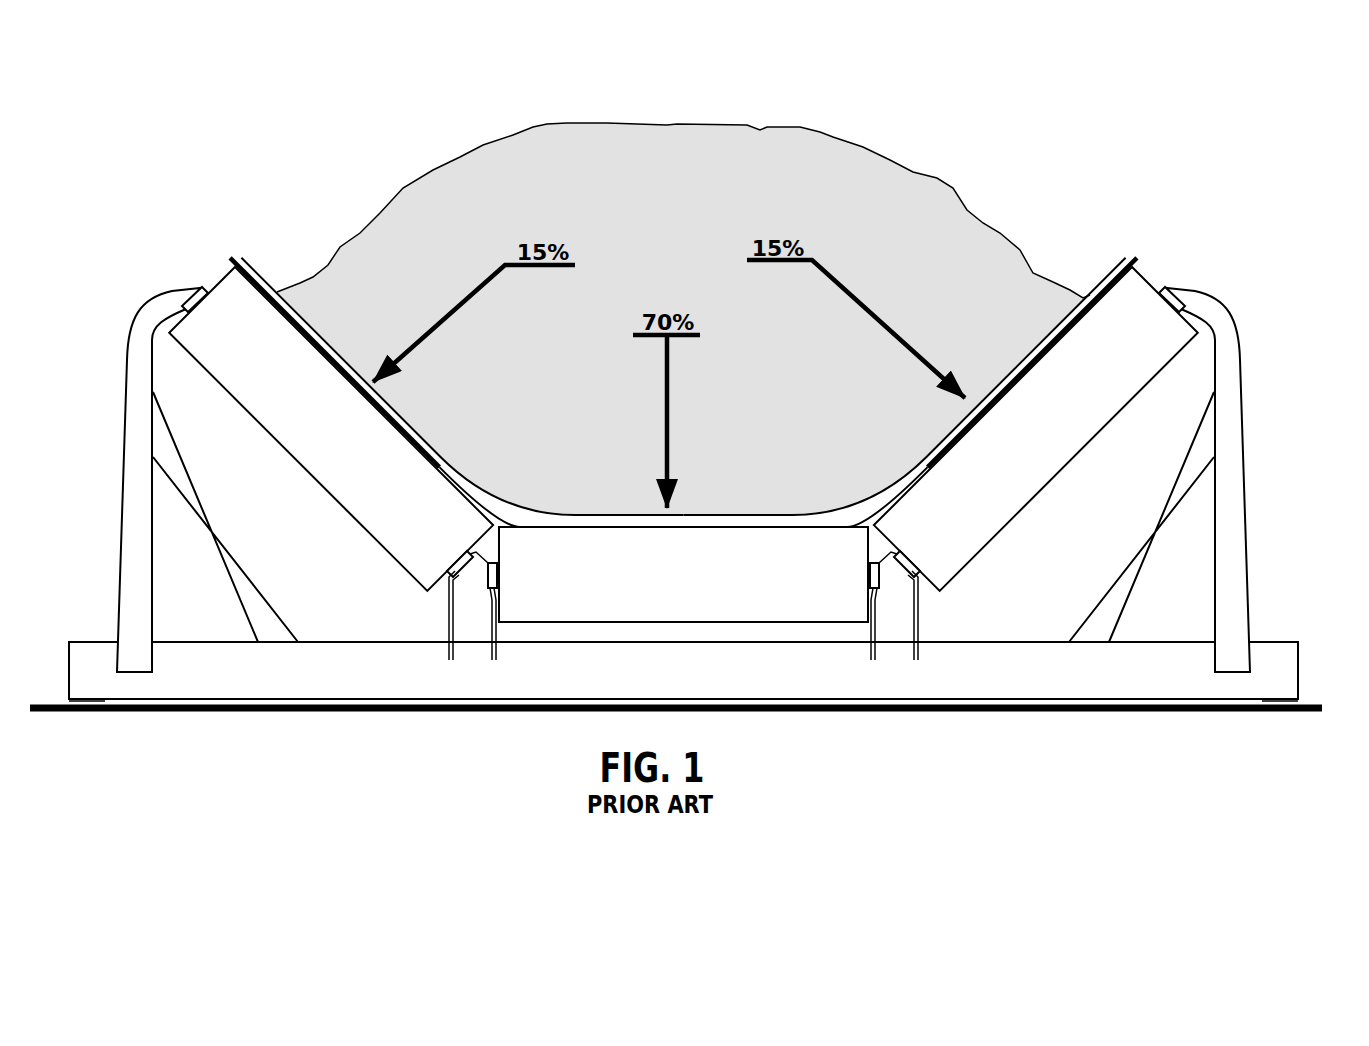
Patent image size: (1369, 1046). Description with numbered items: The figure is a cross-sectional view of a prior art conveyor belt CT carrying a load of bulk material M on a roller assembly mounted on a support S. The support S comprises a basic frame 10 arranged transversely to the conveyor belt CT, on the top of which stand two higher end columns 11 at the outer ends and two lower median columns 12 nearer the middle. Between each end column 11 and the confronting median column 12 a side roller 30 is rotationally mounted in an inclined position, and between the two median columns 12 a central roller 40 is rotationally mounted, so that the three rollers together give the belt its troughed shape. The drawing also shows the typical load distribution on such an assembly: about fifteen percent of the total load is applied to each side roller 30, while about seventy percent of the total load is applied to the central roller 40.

The basic frame 10 is at (1001, 634).
The higher end columns 11 is at (120, 512).
The lower median columns 12 is at (446, 620).
The side roller 30 is at (225, 272).
The central roller 40 is at (727, 624).
The conveyor belt CT is at (1090, 275).
The bulk material M is at (941, 176).
The support S is at (1275, 632).